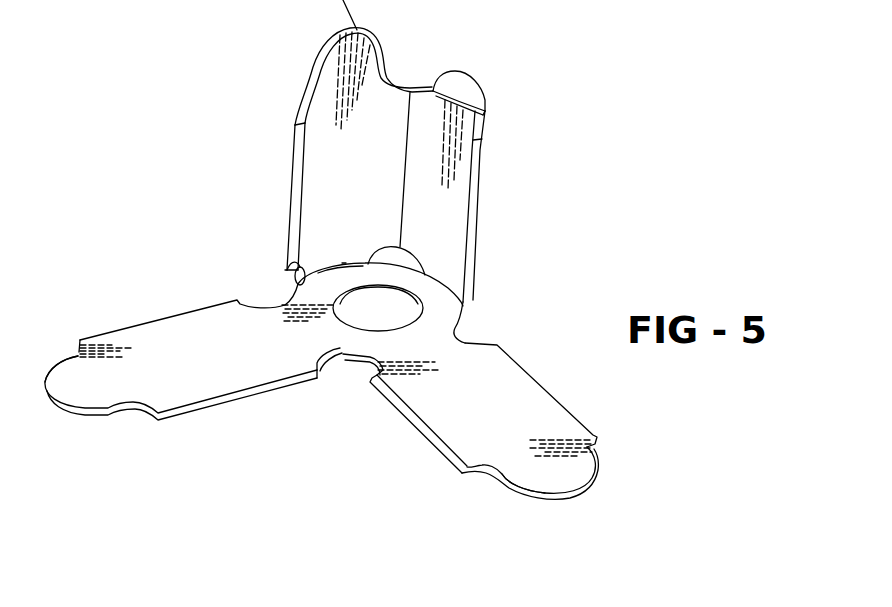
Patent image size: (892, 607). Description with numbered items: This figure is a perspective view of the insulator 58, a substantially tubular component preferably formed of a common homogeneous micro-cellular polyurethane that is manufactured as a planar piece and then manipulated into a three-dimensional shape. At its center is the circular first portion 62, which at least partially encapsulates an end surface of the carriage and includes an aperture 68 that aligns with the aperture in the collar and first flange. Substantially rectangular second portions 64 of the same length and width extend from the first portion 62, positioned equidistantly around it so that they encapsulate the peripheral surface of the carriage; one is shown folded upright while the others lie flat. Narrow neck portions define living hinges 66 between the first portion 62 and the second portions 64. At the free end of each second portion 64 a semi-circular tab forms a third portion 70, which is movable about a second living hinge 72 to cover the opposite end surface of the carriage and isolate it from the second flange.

The insulator 58 is at (257, 270).
The first portion 62 is at (372, 350).
The second portions 64 is at (157, 335).
The living hinges 66 is at (342, 263).
The aperture 68 is at (357, 293).
The third portions 70 is at (452, 85).
The second living hinge 72 is at (85, 390).